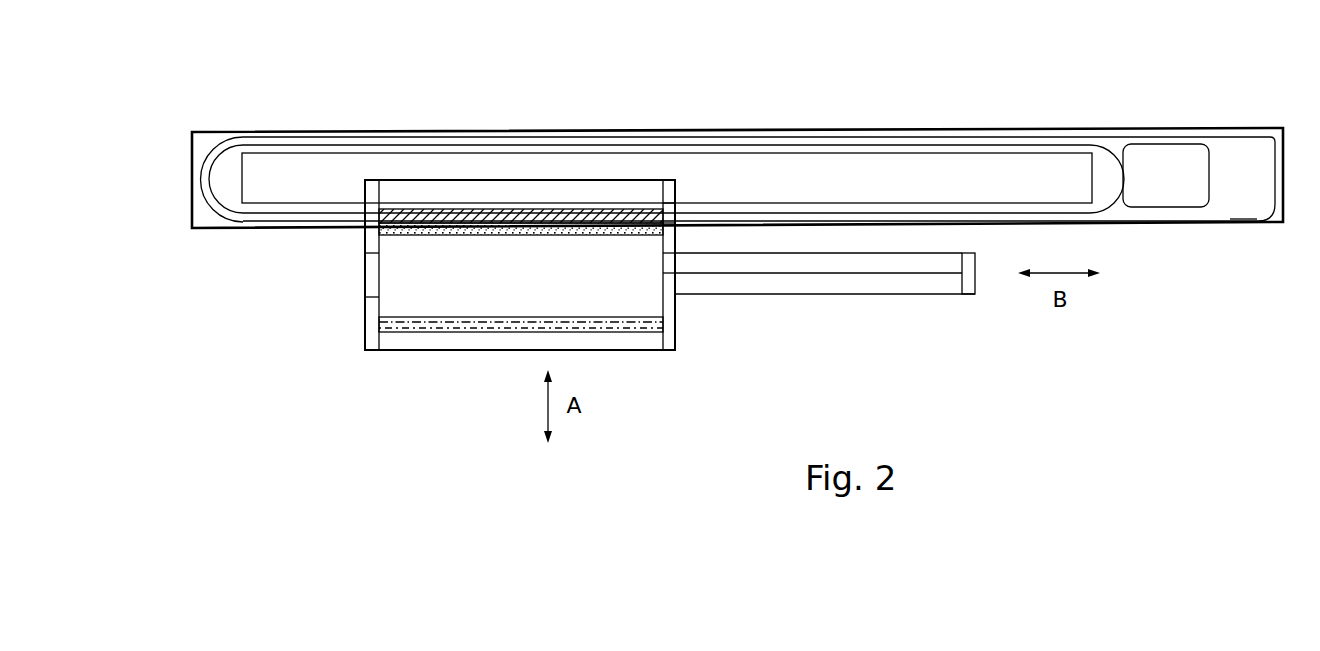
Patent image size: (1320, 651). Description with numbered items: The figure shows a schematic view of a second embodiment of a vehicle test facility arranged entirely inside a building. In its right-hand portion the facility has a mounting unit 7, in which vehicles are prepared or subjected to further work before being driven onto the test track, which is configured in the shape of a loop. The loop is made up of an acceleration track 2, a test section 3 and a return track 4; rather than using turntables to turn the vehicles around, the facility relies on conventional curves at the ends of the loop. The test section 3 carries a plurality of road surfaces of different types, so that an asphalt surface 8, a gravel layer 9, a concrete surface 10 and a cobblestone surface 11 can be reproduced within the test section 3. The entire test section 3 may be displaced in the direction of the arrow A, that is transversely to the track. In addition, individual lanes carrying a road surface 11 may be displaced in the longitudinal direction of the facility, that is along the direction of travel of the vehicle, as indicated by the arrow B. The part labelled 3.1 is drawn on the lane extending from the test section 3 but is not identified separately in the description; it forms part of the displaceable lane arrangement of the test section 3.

The acceleration track 2 is at (765, 208).
The test section 3 is at (322, 283).
The piston rod 3.1 is at (848, 302).
The return track 4 is at (570, 138).
The mounting unit 7 is at (1238, 152).
The asphalt surface 8 is at (437, 215).
The gravel layer 9 is at (515, 228).
The concrete surface 10 is at (487, 327).
The cobblestone surface 11 is at (920, 282).